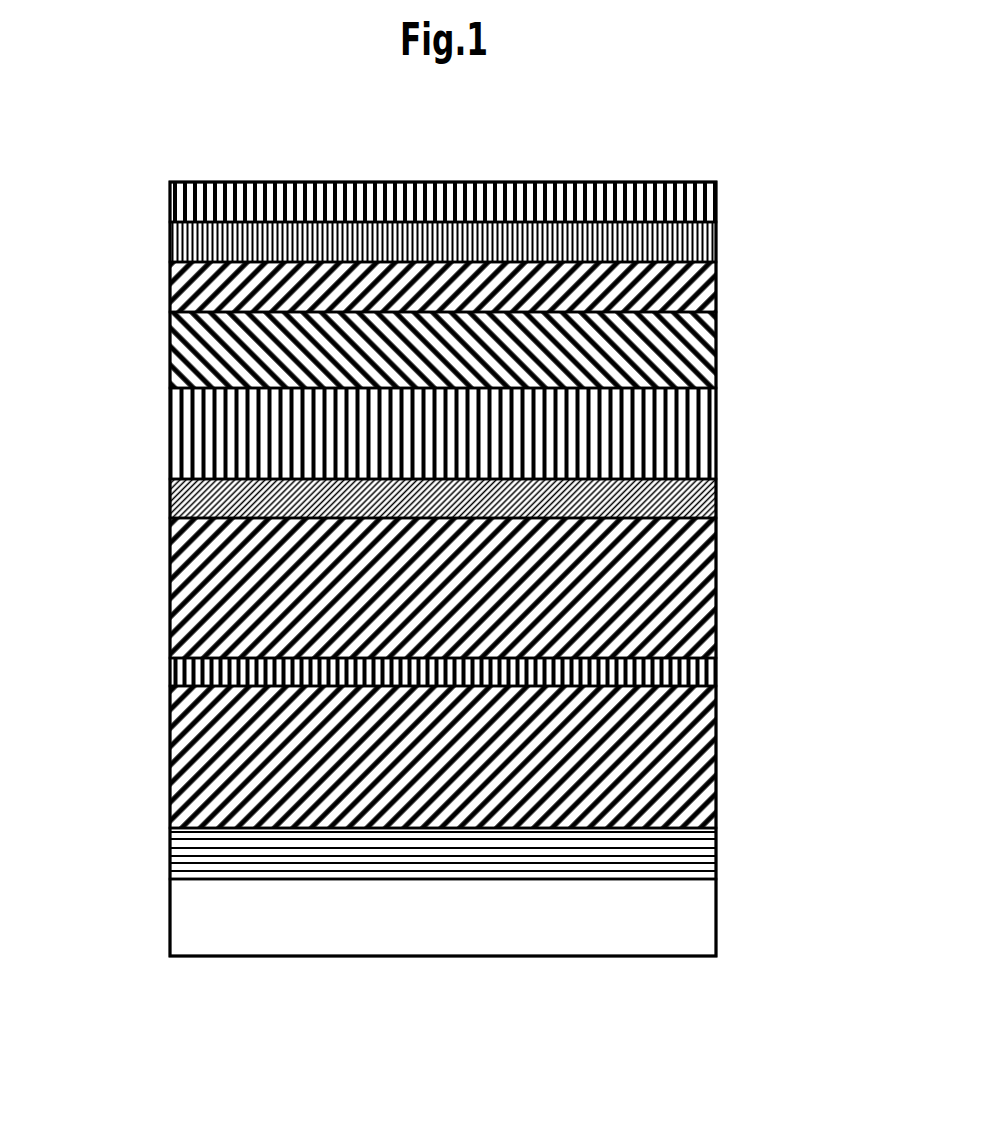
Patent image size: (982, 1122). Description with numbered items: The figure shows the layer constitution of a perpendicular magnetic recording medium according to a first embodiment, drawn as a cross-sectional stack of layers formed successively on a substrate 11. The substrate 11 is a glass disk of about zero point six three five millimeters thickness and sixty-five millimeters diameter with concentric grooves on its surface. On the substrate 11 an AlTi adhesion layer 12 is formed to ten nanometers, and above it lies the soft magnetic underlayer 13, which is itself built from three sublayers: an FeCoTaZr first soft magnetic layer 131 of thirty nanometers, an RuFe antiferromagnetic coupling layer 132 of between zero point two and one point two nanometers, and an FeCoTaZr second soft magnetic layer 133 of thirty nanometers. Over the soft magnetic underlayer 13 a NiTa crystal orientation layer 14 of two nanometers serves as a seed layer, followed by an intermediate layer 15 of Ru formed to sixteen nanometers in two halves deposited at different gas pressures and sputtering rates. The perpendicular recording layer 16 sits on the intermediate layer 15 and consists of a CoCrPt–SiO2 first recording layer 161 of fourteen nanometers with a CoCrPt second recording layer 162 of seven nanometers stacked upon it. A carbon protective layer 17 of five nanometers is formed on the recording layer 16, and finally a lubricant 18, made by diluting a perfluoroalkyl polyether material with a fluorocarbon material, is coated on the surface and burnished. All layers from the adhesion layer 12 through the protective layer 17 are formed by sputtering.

The substrate 11 is at (675, 945).
The adhesion layer 12 is at (675, 868).
The soft magnetic underlayer 13 is at (446, 673).
The first soft magnetic layer 131 is at (195, 762).
The antiferromagnetic coupling layer 132 is at (195, 668).
The second soft magnetic layer 133 is at (195, 585).
The crystal orientation layer 14 is at (700, 505).
The intermediate layer 15 is at (677, 443).
The perpendicular recording layer 16 is at (441, 312).
The first recording layer 161 is at (190, 354).
The second recording layer 162 is at (190, 292).
The protective layer 17 is at (690, 252).
The lubricant 18 is at (690, 215).